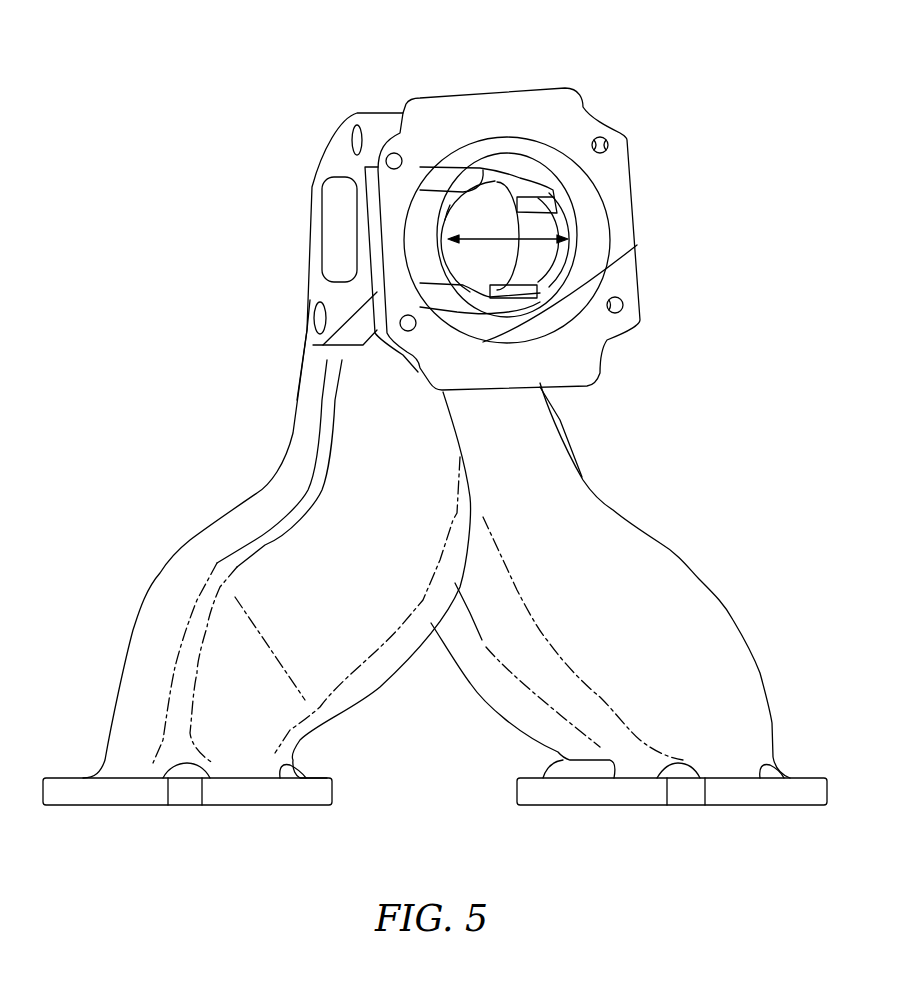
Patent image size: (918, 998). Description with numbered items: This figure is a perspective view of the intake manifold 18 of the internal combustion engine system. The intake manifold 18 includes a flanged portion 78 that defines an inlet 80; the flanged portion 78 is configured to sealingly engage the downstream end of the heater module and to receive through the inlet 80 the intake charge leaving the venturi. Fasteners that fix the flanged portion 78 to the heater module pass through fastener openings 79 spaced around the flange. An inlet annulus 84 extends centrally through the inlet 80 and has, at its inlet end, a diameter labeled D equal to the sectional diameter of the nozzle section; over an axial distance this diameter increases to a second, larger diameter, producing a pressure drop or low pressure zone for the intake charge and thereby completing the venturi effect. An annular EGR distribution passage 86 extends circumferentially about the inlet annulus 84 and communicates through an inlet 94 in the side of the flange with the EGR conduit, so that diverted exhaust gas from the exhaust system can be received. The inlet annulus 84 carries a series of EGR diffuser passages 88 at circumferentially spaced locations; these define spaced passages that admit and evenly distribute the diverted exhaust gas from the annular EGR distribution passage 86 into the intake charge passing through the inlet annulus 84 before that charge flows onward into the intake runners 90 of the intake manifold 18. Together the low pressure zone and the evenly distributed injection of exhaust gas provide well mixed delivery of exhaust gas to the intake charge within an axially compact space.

The intake manifold 18 is at (667, 541).
The flanged portion 78 is at (582, 348).
The fastener openings 79 is at (610, 137).
The inlet 80 is at (458, 268).
The inlet annulus 84 is at (449, 202).
The annular EGR distribution passage 86 is at (490, 155).
The EGR diffuser passages 88 is at (547, 287).
The intake runners 90 is at (267, 613).
The inlet 94 is at (330, 239).